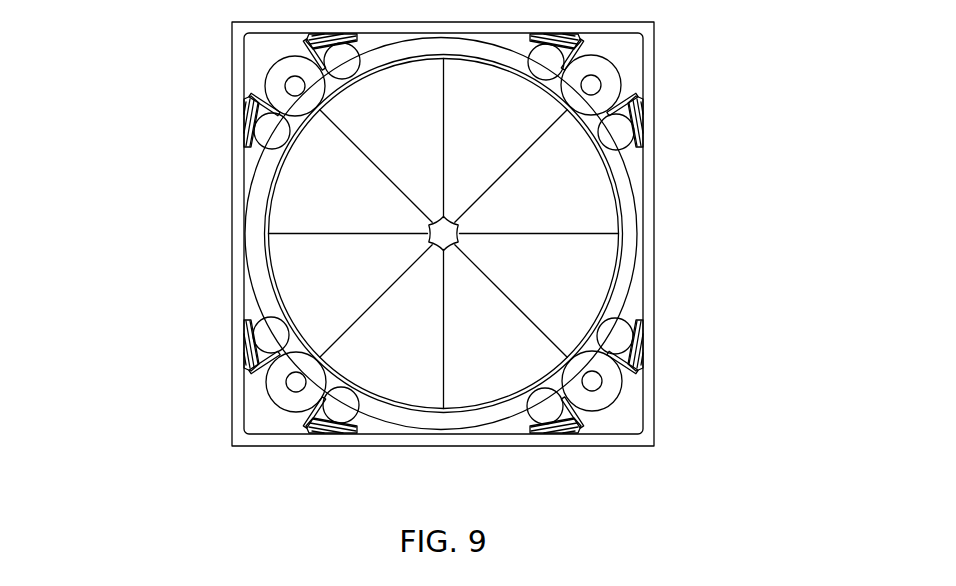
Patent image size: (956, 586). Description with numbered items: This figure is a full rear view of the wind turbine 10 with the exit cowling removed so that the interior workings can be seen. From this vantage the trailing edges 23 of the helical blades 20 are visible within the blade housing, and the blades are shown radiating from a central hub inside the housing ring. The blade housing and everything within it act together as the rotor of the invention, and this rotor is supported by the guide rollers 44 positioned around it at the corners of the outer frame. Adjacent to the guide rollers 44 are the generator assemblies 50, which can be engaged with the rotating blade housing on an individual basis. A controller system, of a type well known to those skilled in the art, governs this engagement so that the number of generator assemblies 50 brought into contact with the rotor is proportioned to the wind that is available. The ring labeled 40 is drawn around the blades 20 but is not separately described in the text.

The wind turbine 10 is at (200, 140).
The helical blades 20 is at (385, 133).
The trailing edges 23 is at (380, 270).
The ring 40 is at (410, 392).
The guide rollers 44 is at (602, 68).
The generator assemblies 50 is at (343, 58).